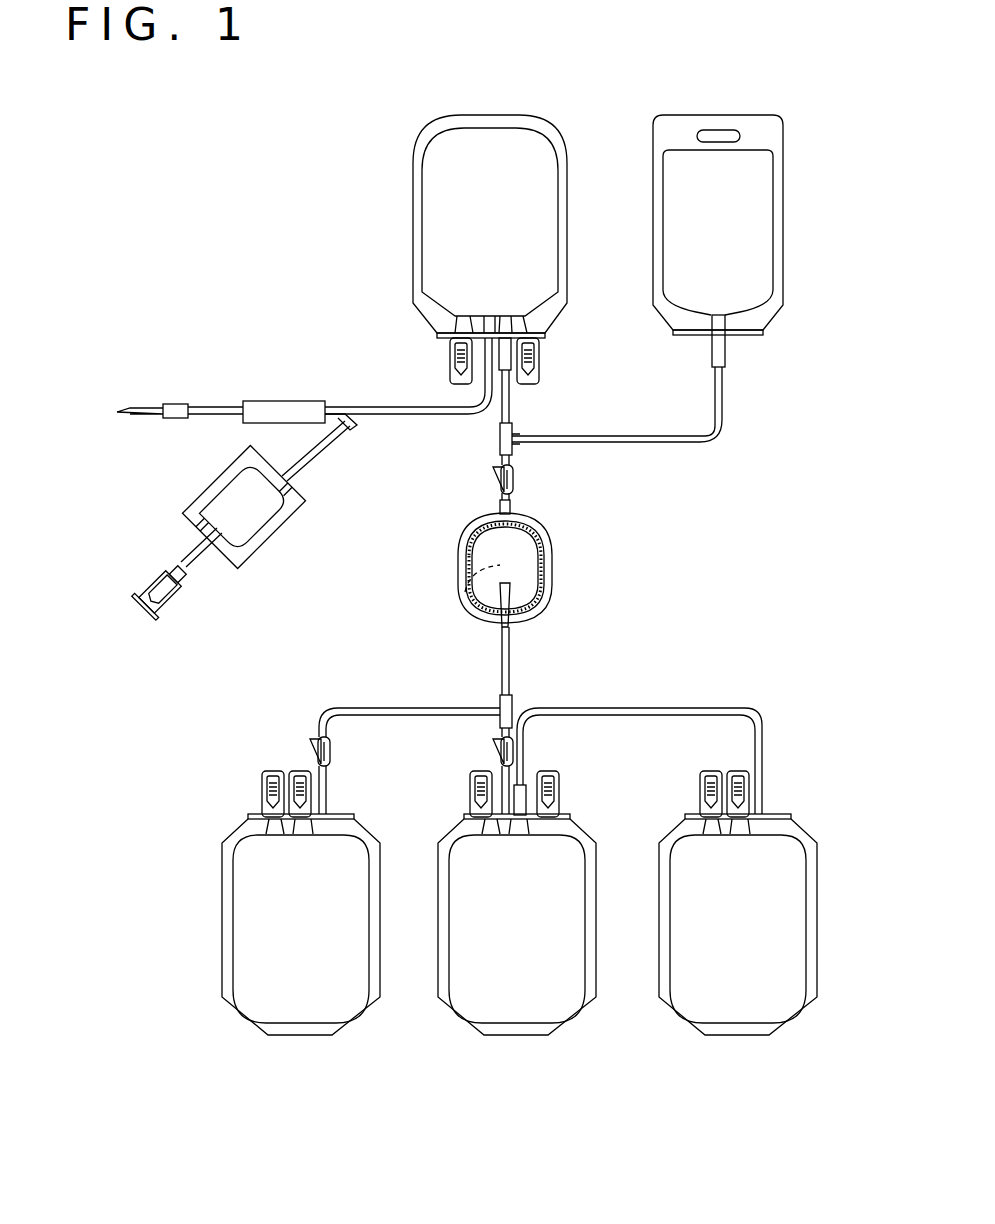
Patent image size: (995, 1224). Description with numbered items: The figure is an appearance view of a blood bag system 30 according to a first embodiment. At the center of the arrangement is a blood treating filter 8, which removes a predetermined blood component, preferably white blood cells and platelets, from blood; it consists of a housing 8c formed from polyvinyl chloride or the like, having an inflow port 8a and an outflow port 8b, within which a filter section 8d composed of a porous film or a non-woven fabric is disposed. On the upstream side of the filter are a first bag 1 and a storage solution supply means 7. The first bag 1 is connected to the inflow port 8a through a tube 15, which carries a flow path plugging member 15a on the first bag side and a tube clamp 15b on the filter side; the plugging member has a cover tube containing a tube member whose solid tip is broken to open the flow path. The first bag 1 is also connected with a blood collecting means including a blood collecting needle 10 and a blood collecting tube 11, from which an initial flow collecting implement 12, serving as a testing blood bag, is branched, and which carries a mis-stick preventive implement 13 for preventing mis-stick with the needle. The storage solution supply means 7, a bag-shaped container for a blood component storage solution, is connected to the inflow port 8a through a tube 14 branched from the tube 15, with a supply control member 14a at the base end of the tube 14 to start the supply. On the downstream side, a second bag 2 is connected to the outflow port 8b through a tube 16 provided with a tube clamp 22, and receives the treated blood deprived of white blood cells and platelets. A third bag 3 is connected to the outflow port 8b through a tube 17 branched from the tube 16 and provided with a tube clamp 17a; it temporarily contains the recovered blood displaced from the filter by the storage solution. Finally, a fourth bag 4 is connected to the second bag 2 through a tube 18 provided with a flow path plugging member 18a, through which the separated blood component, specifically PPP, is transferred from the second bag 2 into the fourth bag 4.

The first bag 1 is at (413, 213).
The second bag 2 is at (517, 1040).
The third bag 3 is at (301, 1040).
The fourth bag 4 is at (738, 1040).
The storage solution supply means 7 is at (789, 222).
The blood treating filter 8 is at (515, 584).
The inflow port 8a is at (512, 510).
The outflow port 8b is at (503, 628).
The housing 8c is at (460, 555).
The filter section 8d is at (465, 591).
The blood collecting needle 10 is at (150, 404).
The blood collecting tube 11 is at (409, 406).
The initial flow collecting implement 12 is at (275, 533).
The mis-stick preventive implement 13 is at (284, 401).
The tube 14 is at (640, 435).
The supply control member 14a is at (727, 358).
The tube 15 is at (511, 406).
The flow path plugging member 15a is at (520, 351).
The tube clamp 15b is at (492, 479).
The tube 16 is at (512, 664).
The tube 17 is at (403, 706).
The tube clamp 17a is at (310, 751).
The tube 18 is at (640, 706).
The flow path plugging member 18a is at (521, 800).
The tube clamp 22 is at (490, 751).
The blood bag system 30 is at (314, 166).